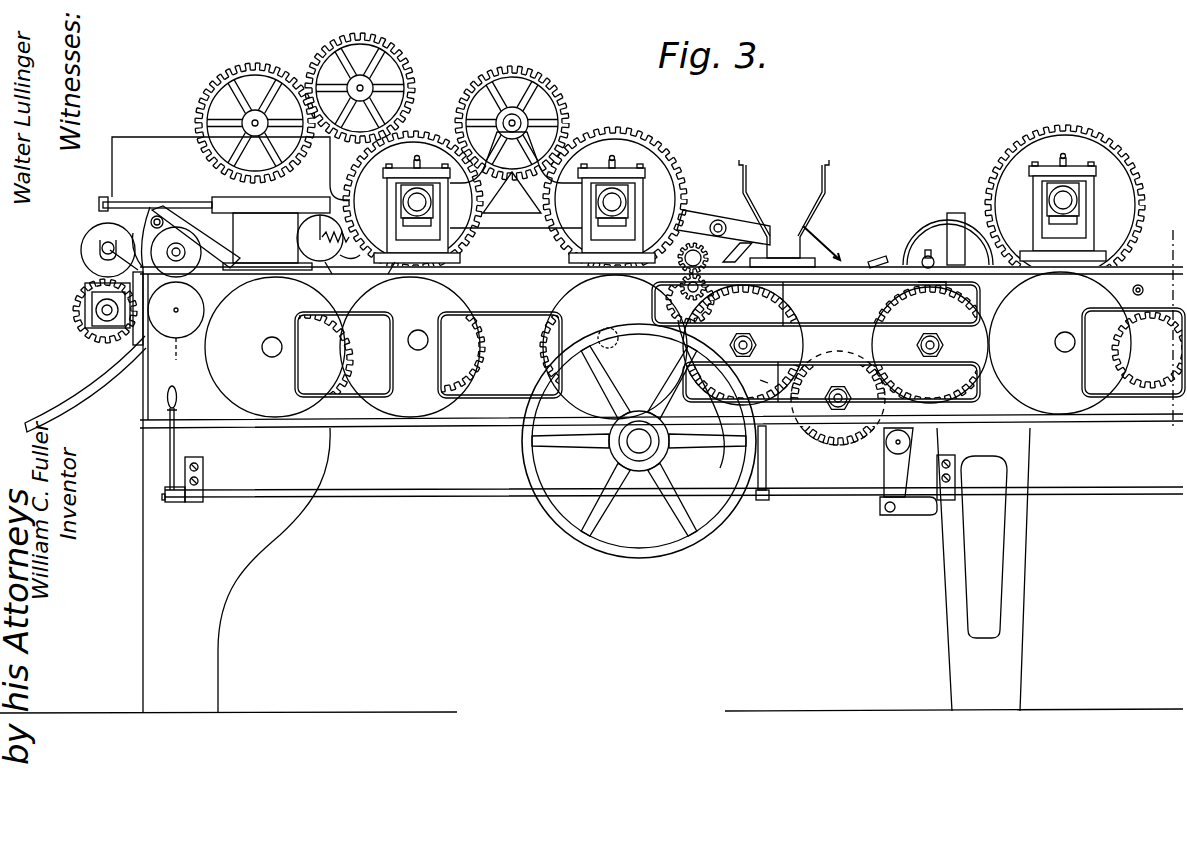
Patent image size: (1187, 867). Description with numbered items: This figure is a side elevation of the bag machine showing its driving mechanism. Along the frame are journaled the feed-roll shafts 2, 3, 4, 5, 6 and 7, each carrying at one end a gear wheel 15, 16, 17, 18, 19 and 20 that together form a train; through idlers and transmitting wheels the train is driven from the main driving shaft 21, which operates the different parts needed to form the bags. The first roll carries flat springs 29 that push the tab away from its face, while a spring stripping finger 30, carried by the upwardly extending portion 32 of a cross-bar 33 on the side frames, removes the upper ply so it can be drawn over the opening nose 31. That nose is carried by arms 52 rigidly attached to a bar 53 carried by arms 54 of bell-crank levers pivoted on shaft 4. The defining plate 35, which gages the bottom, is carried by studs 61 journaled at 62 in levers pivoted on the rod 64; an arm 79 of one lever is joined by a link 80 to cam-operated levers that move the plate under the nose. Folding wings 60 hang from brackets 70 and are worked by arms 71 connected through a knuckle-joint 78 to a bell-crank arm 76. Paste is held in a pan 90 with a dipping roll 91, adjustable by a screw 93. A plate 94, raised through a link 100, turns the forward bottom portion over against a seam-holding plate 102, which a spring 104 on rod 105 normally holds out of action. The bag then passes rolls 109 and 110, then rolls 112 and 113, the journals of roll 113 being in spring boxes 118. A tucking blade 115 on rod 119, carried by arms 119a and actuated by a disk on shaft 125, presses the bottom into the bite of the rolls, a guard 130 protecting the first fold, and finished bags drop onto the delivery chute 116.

The shaft 2 is at (1063, 208).
The shaft 3 is at (1060, 343).
The shaft 4 is at (612, 210).
The shaft 5 is at (612, 346).
The shaft 6 is at (417, 210).
The shaft 7 is at (418, 350).
The gear wheel 15 is at (1108, 139).
The gear wheel 16 is at (1134, 352).
The gear wheel 17 is at (615, 199).
The gear wheel 18 is at (542, 340).
The gear wheel 19 is at (413, 201).
The gear wheel 20 is at (486, 372).
The main driving shaft 21 is at (639, 441).
The flat springs 29 is at (170, 455).
The spring stripping finger 30 is at (958, 233).
The opening nose 31 is at (828, 243).
The upwardly extending portion 32 is at (949, 218).
The cross-bar 33 is at (948, 247).
The defining plate 35 is at (884, 258).
The arms 52 is at (740, 244).
The bar 53 is at (718, 220).
The arms of bell-crank levers 54 is at (688, 210).
The folding wings 60 is at (784, 209).
The studs 61 is at (932, 281).
The journal 62 is at (936, 262).
The shaft or rod 64 is at (912, 442).
The brackets 70 is at (746, 271).
The arms 71 is at (755, 380).
The arm 76 is at (728, 450).
The knuckle-joint 78 is at (780, 434).
The arm 79 is at (908, 471).
The link 80 is at (982, 505).
The pan 90 is at (231, 168).
The dipping roll 91 is at (270, 62).
The screw 93 is at (109, 239).
The plate 94 is at (330, 272).
The link 100 is at (356, 263).
The plate 102 is at (395, 275).
The spring 104 is at (298, 250).
The rod 105 is at (302, 230).
The roll 109 is at (176, 252).
The roll 110 is at (182, 357).
The roll 112 is at (95, 250).
The roll 113 is at (70, 297).
The tucking blade 115 is at (166, 216).
The delivery chute 116 is at (89, 414).
The spring boxes 118 is at (90, 311).
The rod 119 is at (136, 203).
The arms 119a is at (196, 237).
The shaft 125 is at (275, 347).
The guard 130 is at (132, 219).